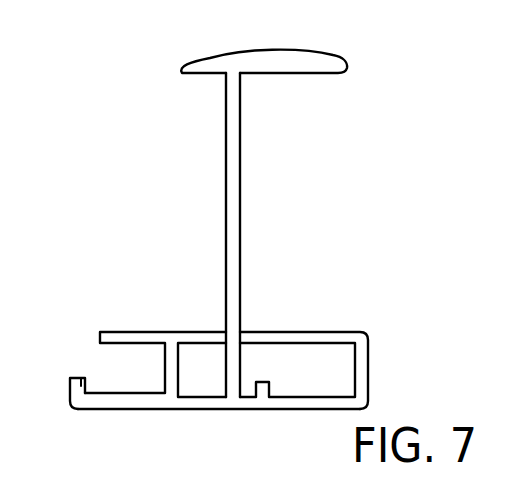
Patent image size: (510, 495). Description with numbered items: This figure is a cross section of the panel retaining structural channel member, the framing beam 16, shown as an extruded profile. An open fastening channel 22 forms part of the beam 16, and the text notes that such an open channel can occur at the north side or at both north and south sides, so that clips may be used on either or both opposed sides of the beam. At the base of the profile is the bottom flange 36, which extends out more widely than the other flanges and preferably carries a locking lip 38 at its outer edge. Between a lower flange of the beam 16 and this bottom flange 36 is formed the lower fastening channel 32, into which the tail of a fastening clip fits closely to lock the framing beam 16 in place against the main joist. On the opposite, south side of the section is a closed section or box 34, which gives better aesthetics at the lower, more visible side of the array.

The framing beam 16 is at (357, 60).
The open fastening channel 22 is at (337, 325).
The fastening channel 32 is at (125, 377).
The closed section or box 34 is at (363, 350).
The bottom flange 36 is at (210, 410).
The locking lip 38 is at (77, 377).